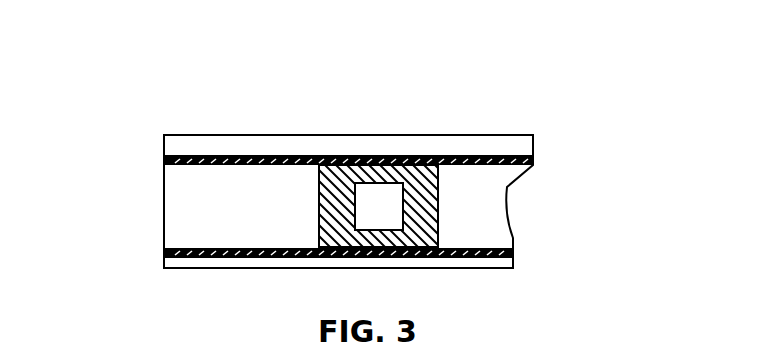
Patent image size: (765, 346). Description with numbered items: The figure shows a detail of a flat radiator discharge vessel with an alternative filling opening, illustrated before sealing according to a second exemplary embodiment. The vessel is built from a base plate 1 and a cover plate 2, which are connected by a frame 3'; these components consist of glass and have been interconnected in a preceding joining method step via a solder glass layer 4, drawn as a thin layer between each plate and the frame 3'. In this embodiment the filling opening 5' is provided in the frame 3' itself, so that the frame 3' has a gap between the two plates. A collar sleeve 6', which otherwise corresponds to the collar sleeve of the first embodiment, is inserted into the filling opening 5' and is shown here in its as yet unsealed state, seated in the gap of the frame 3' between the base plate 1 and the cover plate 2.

The base plate 1 is at (505, 261).
The cover plate 2 is at (493, 143).
The frame 3' is at (349, 201).
The solder glass layer 4 is at (167, 158).
The filling opening 5' is at (379, 142).
The collar sleeve 6' is at (377, 150).